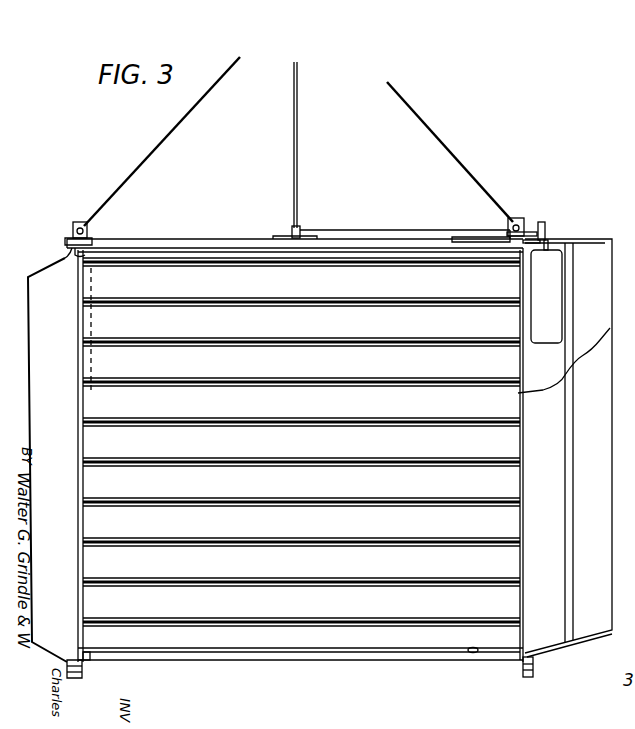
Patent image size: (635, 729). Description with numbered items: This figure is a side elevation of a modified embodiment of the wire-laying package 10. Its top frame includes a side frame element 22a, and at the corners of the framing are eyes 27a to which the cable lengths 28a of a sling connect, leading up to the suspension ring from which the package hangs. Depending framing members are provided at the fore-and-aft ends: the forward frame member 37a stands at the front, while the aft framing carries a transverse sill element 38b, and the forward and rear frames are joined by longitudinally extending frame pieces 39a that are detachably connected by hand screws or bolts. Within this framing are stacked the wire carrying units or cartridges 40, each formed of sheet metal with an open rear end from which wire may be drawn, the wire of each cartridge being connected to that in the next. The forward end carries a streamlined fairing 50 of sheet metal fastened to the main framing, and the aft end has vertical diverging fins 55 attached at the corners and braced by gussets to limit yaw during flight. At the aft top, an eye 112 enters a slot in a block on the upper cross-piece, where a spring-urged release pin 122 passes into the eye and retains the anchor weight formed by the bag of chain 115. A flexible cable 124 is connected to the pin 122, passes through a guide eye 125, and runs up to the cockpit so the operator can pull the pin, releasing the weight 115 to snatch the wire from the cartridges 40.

The package 10 is at (232, 232).
The side frame element 22a is at (173, 240).
The eye 27a is at (74, 228).
The cable length 28a is at (195, 108).
The forward frame member 37a is at (88, 322).
The transverse sill element 38b is at (535, 662).
The longitudinally extending frame piece 39a is at (277, 653).
The wire carrying unit or cartridge 40 is at (352, 310).
The streamlined fairing 50 is at (42, 372).
The vertical diverging fin 55 is at (598, 272).
The eye 112 is at (540, 222).
The bag of chain 115 is at (547, 333).
The release pin 122 is at (547, 232).
The flexible cable 124 is at (296, 108).
The guide eye 125 is at (302, 227).